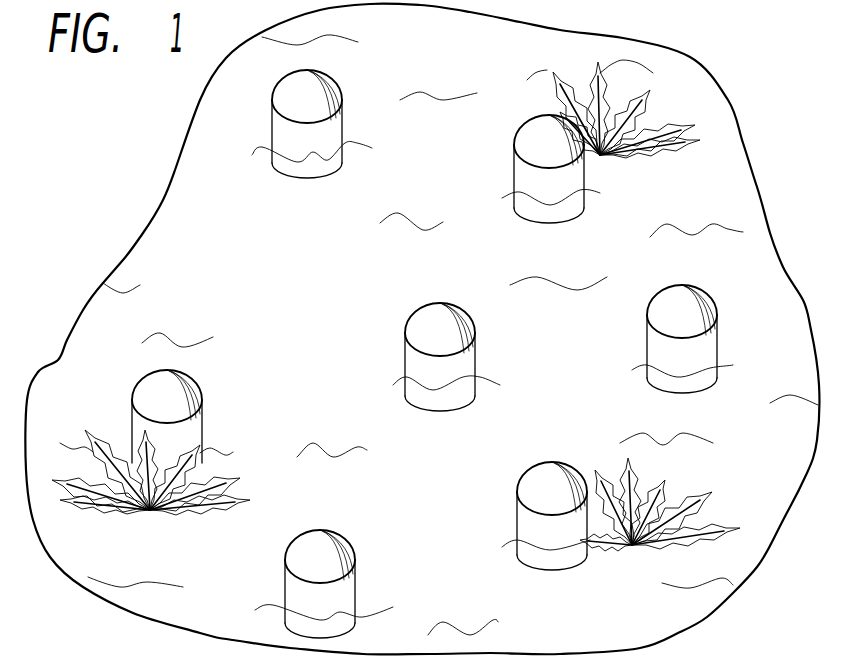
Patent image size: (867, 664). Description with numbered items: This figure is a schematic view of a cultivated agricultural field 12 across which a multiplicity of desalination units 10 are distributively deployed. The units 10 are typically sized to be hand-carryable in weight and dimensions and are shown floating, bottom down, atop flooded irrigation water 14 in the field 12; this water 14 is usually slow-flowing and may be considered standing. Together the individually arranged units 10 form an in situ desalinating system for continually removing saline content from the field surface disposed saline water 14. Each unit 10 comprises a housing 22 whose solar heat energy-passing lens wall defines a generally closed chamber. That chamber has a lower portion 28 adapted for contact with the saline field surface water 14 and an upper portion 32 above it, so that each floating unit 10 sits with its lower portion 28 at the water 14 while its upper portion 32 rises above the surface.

The desalination unit 10 is at (272, 128).
The agricultural field 12 is at (700, 185).
The flooded irrigation water 14 is at (300, 254).
The housing 22 is at (472, 327).
The lower portion 28 is at (336, 583).
The upper portion 32 is at (297, 566).